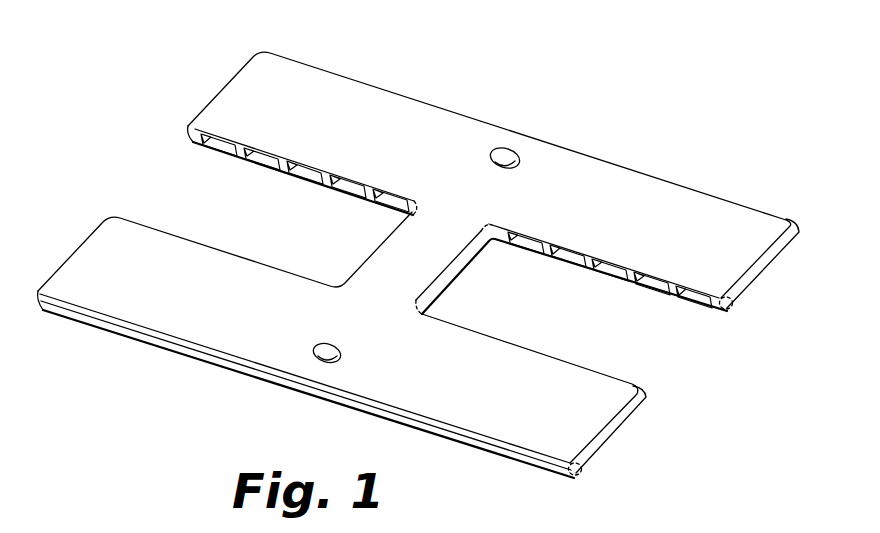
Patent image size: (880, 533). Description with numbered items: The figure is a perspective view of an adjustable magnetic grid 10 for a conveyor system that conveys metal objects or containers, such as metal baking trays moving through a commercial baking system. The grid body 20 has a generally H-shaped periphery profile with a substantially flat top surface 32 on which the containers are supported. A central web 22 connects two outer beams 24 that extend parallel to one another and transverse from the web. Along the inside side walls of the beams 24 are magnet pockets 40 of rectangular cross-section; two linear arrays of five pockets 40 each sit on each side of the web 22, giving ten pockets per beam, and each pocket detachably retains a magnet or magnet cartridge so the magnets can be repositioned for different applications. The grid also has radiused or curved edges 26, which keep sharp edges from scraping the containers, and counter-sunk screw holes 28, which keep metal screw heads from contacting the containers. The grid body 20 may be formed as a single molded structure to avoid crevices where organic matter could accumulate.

The adjustable magnetic grid 10 is at (441, 250).
The grid body 20 is at (516, 208).
The central web 22 is at (423, 257).
The outer beam 24 is at (349, 384).
The curved edge 26 is at (160, 333).
The counter-sunk screw hole 28 is at (500, 154).
The top surface 32 is at (309, 120).
The magnet pocket 40 is at (697, 300).